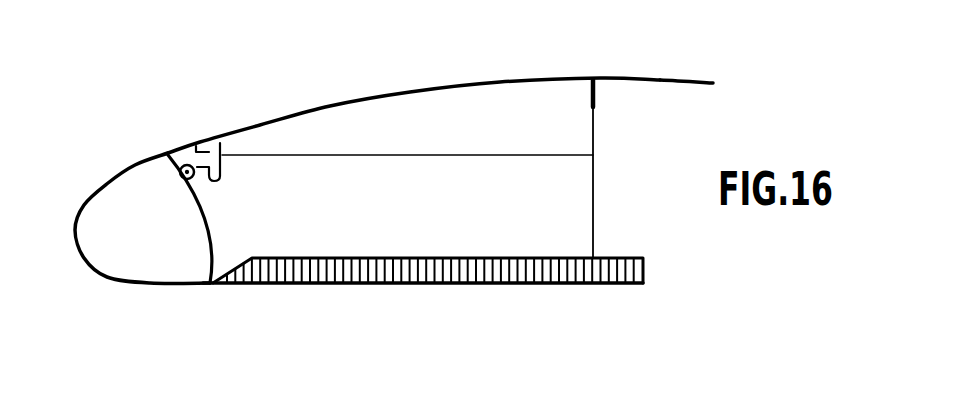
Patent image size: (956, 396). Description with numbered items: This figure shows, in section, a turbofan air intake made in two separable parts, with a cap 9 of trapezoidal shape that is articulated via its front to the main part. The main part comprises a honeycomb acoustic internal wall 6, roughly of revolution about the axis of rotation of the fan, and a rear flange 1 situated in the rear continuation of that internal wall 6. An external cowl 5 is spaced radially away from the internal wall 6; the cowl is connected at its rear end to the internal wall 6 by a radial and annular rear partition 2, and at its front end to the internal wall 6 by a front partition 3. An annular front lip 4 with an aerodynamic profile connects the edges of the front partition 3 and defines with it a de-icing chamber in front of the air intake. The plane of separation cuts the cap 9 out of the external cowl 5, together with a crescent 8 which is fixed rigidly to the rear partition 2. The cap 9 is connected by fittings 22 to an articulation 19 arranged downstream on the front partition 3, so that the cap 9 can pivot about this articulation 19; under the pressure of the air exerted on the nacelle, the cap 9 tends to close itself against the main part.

The rear flange 1 is at (622, 254).
The rear partition 2 is at (594, 200).
The front partition 3 is at (205, 220).
The front lip 4 is at (75, 230).
The external cowl 5 is at (682, 80).
The honeycomb acoustic internal wall 6 is at (467, 284).
The crescent 8 is at (594, 122).
The cap 9 is at (410, 92).
The articulation 19 is at (180, 174).
The fittings 22 is at (220, 143).